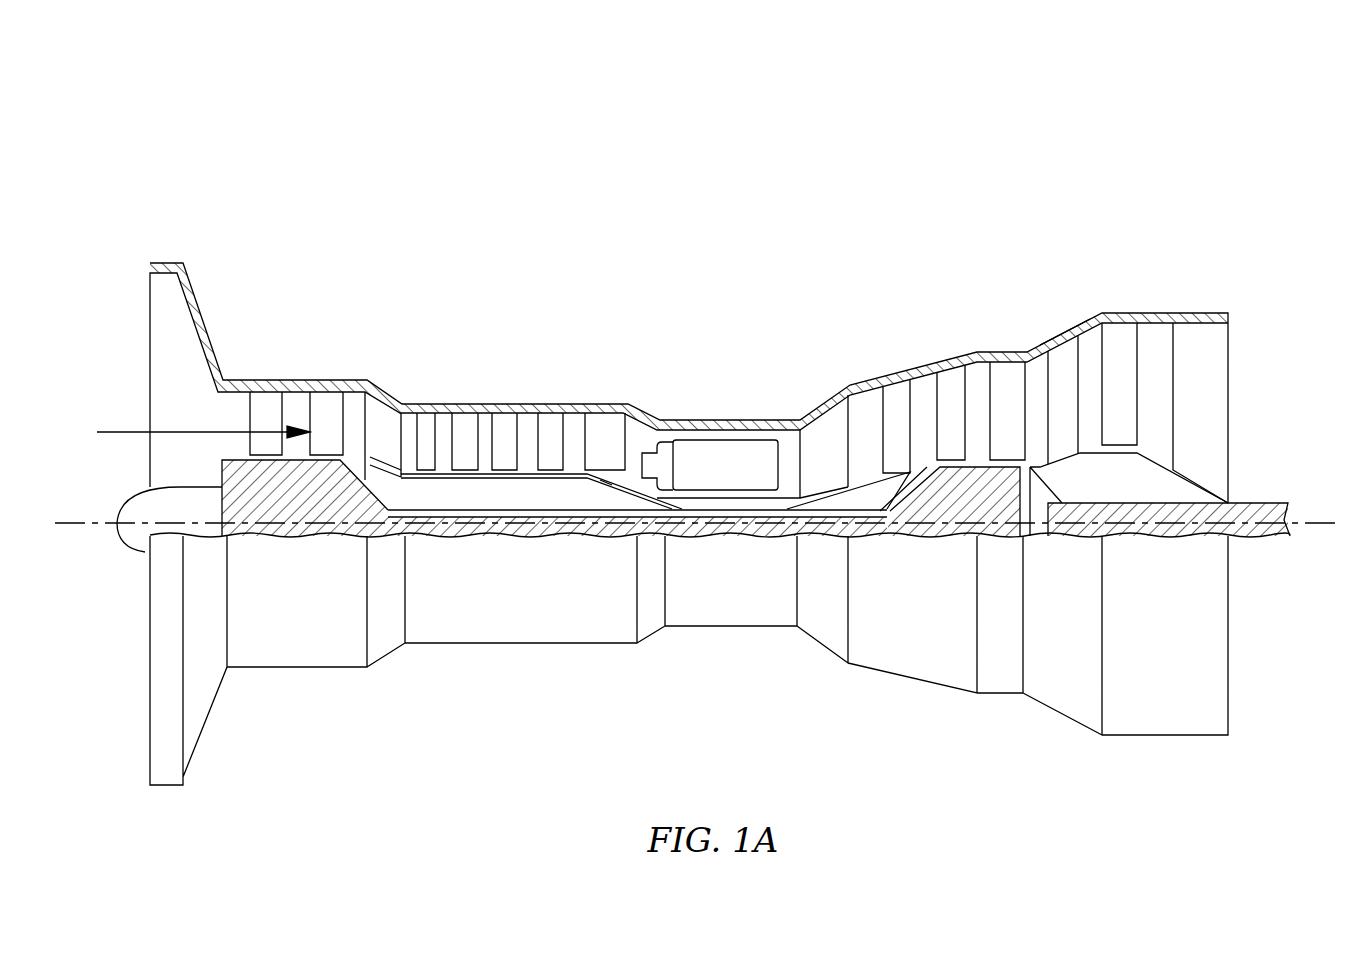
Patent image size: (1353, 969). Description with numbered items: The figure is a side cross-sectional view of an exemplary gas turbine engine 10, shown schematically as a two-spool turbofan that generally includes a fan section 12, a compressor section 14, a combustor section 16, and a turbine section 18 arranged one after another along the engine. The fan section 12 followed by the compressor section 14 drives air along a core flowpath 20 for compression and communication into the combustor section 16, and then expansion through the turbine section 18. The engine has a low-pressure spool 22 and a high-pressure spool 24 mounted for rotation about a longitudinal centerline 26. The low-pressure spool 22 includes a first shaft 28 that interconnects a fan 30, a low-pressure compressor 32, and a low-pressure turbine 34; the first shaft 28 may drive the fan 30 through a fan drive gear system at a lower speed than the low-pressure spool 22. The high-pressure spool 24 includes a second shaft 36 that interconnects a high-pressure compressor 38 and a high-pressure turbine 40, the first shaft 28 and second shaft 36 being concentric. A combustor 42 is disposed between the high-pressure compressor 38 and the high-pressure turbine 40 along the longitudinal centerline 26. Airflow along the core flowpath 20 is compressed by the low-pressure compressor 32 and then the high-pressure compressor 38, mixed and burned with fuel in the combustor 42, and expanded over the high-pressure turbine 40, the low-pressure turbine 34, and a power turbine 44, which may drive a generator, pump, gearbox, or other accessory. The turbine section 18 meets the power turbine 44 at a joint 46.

The gas turbine engine 10 is at (1133, 160).
The fan section 12 is at (244, 394).
The compressor section 14 is at (541, 340).
The combustor section 16 is at (745, 342).
The turbine section 18 is at (1038, 359).
The core flowpath 20 is at (113, 432).
The low-pressure spool 22 is at (496, 504).
The high-pressure spool 24 is at (644, 512).
The longitudinal centerline 26 is at (1335, 530).
The first shaft 28 is at (527, 512).
The fan 30 is at (137, 533).
The low-pressure compressor 32 is at (297, 400).
The low-pressure turbine 34 is at (1003, 375).
The second shaft 36 is at (607, 484).
The high-pressure compressor 38 is at (505, 440).
The high-pressure turbine 40 is at (898, 393).
The combustor 42 is at (725, 450).
The power turbine 44 is at (1157, 333).
The joint 46 is at (1066, 322).